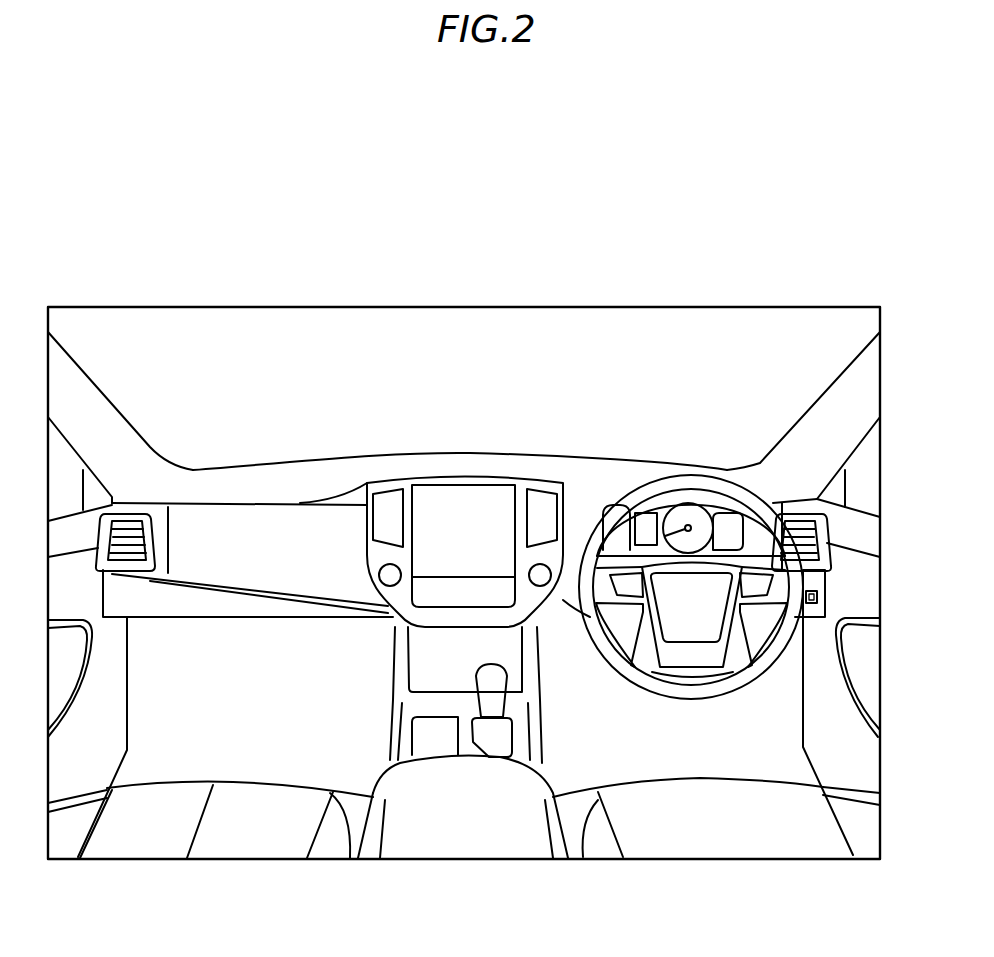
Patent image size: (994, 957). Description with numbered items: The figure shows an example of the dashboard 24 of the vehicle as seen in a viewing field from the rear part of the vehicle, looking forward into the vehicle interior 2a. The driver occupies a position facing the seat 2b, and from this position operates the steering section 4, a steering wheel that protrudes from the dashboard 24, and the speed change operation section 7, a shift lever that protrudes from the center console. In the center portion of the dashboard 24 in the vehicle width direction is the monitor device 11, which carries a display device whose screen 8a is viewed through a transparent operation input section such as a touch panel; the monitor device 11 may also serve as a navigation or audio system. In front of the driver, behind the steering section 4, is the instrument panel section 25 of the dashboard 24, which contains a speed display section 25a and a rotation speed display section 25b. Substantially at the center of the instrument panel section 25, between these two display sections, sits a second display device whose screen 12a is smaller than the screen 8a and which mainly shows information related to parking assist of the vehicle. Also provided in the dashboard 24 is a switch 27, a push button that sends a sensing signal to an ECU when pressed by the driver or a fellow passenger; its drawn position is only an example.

The vehicle interior 2a is at (260, 328).
The seat 2b is at (677, 846).
The dashboard 24 is at (353, 460).
The monitor device 11 is at (451, 503).
The screen 8a is at (490, 505).
The screen 12a is at (660, 500).
The speed display section 25a is at (592, 515).
The instrument panel section 25 is at (688, 512).
The rotation speed display section 25b is at (717, 490).
The steering section 4 is at (720, 478).
The switch 27 is at (826, 598).
The speed change operation section 7 is at (492, 705).